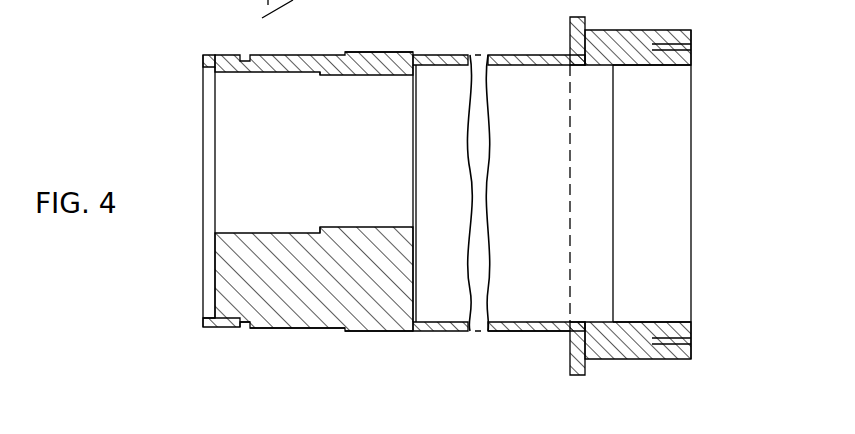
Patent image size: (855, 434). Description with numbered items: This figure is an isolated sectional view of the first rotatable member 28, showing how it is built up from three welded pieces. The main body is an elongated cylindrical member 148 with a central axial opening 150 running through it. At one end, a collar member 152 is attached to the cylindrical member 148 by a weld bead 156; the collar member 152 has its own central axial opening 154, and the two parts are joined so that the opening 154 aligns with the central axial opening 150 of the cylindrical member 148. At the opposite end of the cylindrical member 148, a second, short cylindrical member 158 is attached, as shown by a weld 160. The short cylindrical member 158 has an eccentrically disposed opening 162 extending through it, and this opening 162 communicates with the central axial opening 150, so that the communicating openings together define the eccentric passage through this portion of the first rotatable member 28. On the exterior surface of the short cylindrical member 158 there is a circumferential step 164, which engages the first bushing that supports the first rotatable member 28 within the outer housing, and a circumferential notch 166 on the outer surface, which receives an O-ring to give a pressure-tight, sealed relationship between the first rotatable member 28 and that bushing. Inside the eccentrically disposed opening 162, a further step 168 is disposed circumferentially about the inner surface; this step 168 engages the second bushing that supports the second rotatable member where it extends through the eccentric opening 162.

The first rotatable member 28 is at (469, 55).
The elongated cylindrical member 148 is at (548, 333).
The central axial opening 150 is at (542, 181).
The collar member 152 is at (614, 34).
The central axial opening 154 is at (668, 181).
The weld bead 156 is at (570, 54).
The short cylindrical member 158 is at (240, 249).
The weld 160 is at (363, 55).
The eccentrically disposed opening 162 is at (324, 152).
The step 164 is at (346, 331).
The notch 166 is at (243, 322).
The step 168 is at (304, 76).